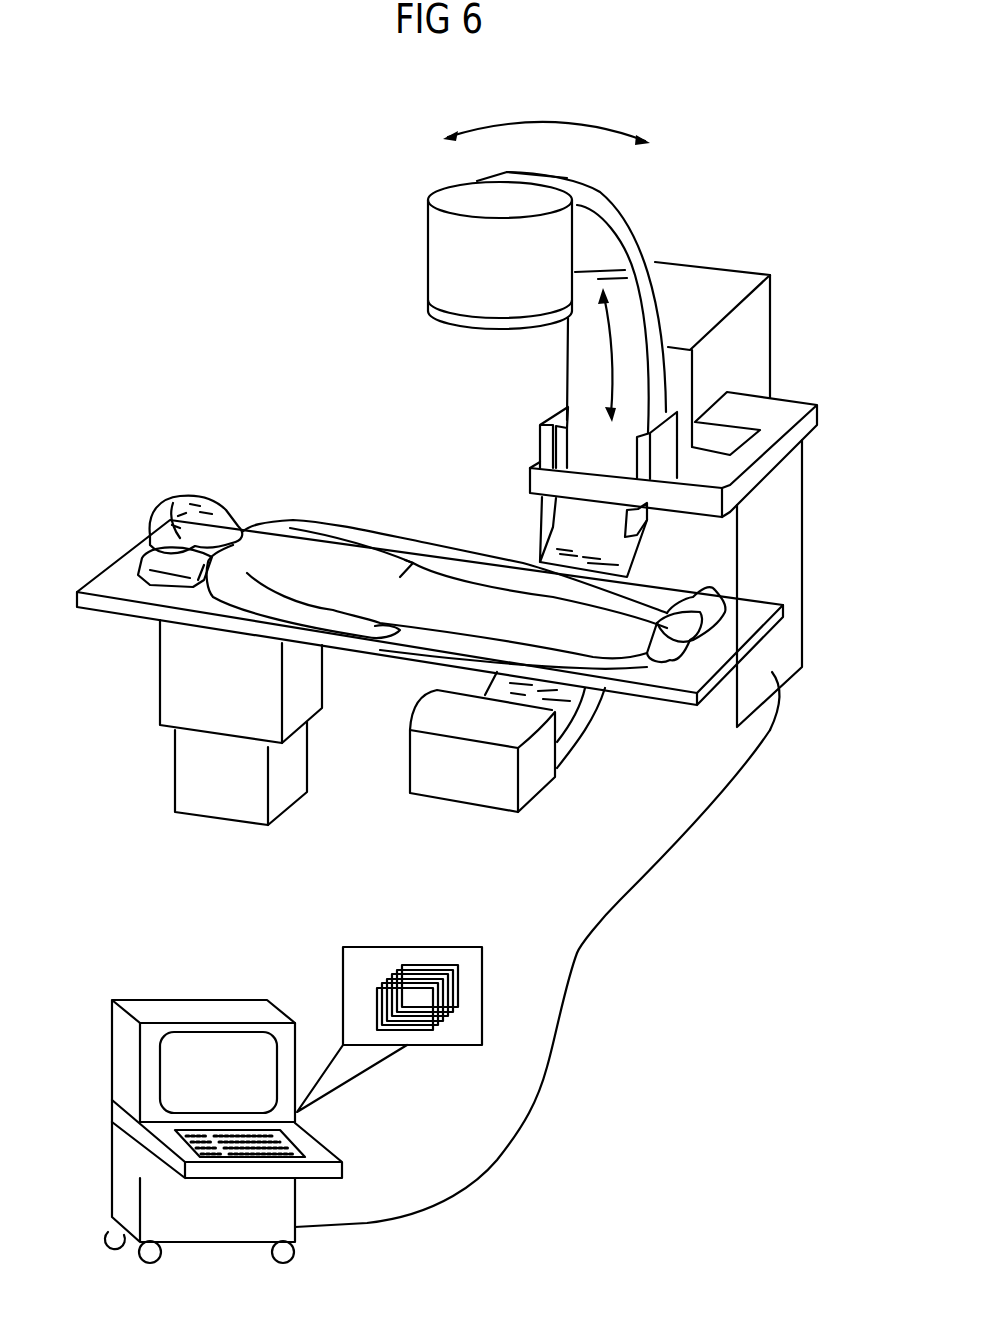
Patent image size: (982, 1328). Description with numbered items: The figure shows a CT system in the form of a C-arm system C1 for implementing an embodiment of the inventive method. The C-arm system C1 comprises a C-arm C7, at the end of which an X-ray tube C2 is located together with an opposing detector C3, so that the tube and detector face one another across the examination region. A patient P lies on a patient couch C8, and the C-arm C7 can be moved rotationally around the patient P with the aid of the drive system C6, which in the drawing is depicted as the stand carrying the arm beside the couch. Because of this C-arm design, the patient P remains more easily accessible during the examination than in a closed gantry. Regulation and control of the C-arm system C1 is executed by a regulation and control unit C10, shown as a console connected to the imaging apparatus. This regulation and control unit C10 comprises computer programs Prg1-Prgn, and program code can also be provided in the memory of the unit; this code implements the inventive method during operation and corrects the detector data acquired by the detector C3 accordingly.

The C-arm system C1 is at (143, 398).
The X-ray tube C2 is at (437, 252).
The C-arm C7 is at (618, 208).
The drive system C6 is at (762, 320).
The detector C3 is at (535, 782).
The patient couch C8 is at (97, 603).
The patient P is at (322, 542).
The regulation and control unit C10 is at (317, 1152).
The computer programs Prg1-Prgn is at (420, 1030).